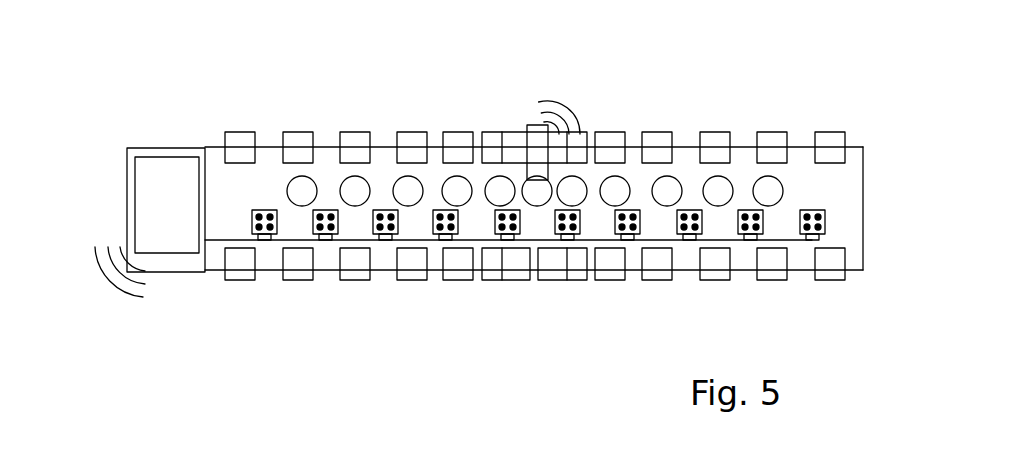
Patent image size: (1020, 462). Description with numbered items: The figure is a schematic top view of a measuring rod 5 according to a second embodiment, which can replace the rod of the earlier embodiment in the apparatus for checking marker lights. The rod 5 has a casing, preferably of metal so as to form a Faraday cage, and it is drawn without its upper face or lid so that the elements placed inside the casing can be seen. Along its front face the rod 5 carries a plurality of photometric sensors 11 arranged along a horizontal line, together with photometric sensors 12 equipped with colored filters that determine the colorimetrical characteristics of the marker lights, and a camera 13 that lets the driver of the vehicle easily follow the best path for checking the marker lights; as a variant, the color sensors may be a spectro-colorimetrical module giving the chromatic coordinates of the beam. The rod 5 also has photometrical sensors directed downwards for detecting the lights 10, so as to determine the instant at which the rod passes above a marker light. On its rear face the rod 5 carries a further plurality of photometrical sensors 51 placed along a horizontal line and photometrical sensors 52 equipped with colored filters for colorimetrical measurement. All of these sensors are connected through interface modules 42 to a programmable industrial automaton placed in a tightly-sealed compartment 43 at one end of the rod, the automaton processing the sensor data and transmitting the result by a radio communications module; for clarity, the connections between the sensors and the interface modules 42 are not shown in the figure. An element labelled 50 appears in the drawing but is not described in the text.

The measuring rod 5 is at (858, 262).
The lights 10 is at (297, 188).
The photometric sensors 11 is at (242, 132).
The photometric sensors equipped with colored filters 12 is at (523, 132).
The camera 13 is at (535, 125).
The interface modules 42 is at (250, 222).
The tightly-sealed compartment 43 is at (127, 147).
The display 50 is at (157, 235).
The photometrical sensors 51 is at (533, 282).
The photometrical sensors equipped with colored filters 52 is at (553, 282).